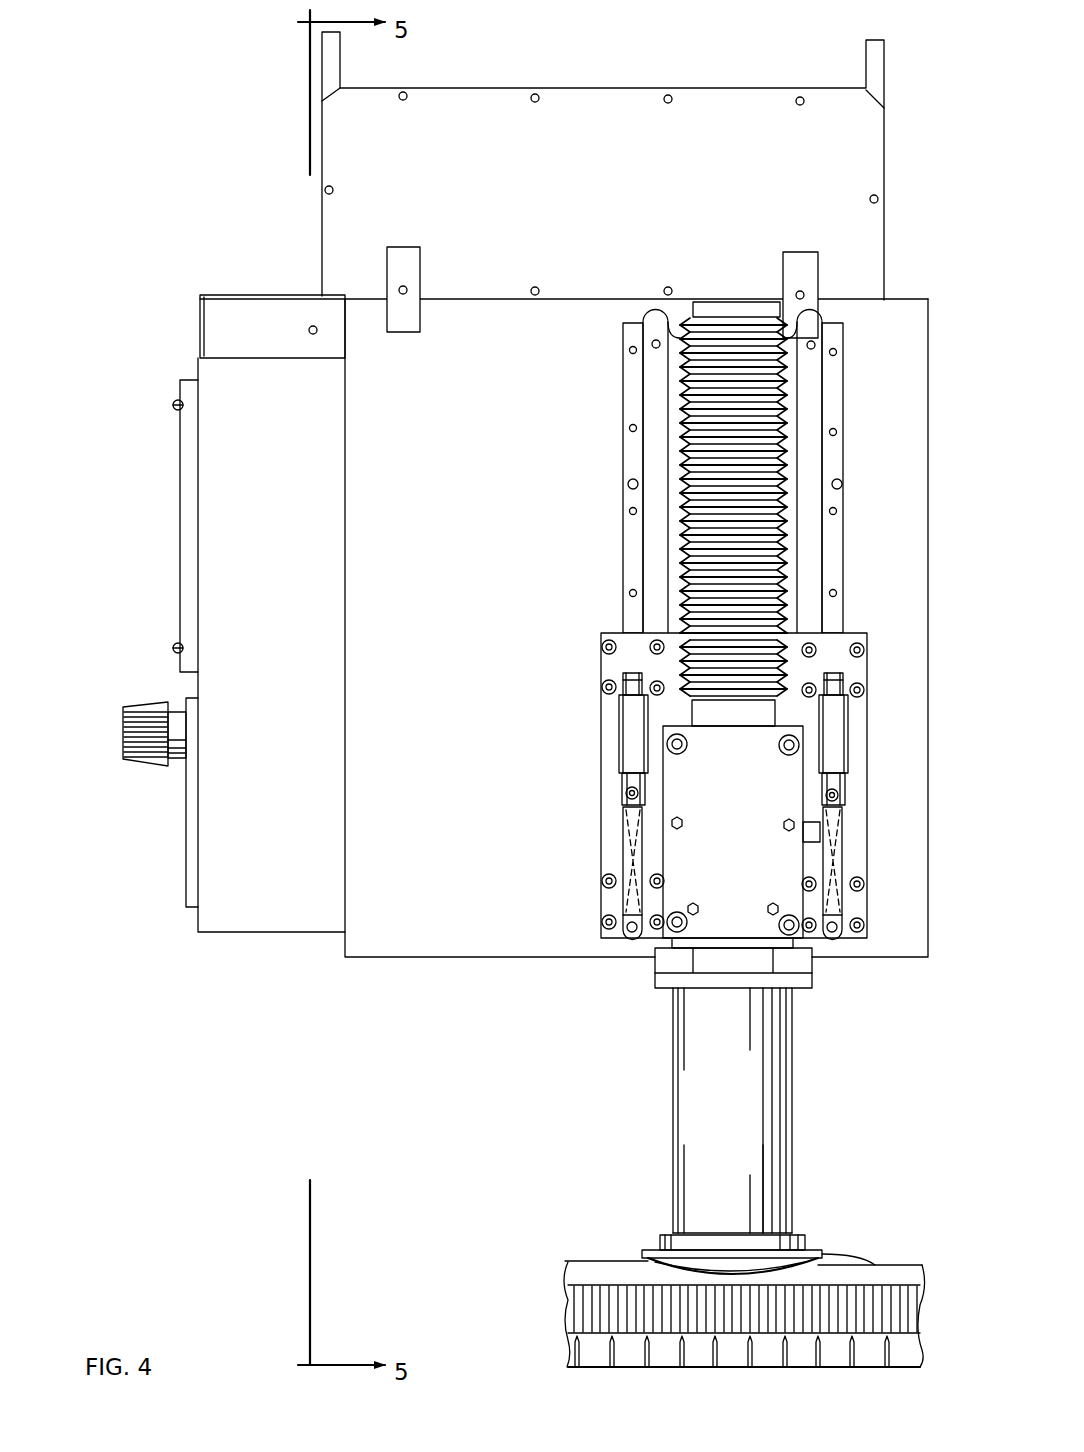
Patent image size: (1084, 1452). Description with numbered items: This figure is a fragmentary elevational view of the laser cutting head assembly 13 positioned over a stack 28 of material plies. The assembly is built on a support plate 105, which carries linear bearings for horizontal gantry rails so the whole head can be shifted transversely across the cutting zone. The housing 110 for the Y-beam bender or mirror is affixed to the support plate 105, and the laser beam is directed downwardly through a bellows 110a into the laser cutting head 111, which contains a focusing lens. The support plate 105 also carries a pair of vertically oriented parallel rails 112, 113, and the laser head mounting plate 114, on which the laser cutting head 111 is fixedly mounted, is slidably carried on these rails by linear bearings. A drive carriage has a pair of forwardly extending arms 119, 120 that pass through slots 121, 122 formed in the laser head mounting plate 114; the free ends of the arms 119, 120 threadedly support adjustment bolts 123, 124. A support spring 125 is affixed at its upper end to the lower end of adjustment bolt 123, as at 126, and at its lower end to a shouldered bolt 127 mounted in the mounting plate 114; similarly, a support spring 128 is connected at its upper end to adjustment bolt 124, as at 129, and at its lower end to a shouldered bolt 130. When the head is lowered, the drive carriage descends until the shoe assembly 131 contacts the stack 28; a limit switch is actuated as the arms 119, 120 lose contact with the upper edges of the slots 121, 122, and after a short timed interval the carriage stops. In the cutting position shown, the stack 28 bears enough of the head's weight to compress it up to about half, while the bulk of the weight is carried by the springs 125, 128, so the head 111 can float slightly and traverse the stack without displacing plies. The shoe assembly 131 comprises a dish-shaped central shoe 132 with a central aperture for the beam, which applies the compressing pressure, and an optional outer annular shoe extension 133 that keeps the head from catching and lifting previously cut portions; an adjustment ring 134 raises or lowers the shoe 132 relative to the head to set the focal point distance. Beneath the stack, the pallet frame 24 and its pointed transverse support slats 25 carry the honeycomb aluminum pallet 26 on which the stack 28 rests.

The housing 110 is at (332, 263).
The rail 112 is at (652, 400).
The rail 113 is at (835, 402).
The bellows 110a is at (712, 487).
The laser head mounting plate 114 is at (625, 640).
The adjustment bolt 123 is at (628, 688).
The adjustment bolt 124 is at (838, 688).
The arm 119 is at (630, 740).
The arm 120 is at (832, 740).
The slot 121 is at (628, 772).
The slot 122 is at (835, 772).
The spring attachment point 126 is at (625, 788).
The spring attachment point 129 is at (838, 795).
The support spring 125 is at (628, 845).
The support spring 128 is at (832, 855).
The shouldered bolt 127 is at (633, 937).
The shouldered bolt 130 is at (822, 940).
The support plate 105 is at (387, 932).
The laser cutting head assembly 13 is at (483, 930).
The laser cutting head 111 is at (765, 1112).
The outer annular shoe extension 133 is at (660, 1245).
The adjustment ring 134 is at (822, 1250).
The laser cutting head shoe assembly 131 is at (830, 1248).
The central shoe 132 is at (720, 1275).
The stack 28 is at (875, 1262).
The aluminum pallet 26 is at (565, 1285).
The pallet frame 24 is at (592, 1346).
The support slats 25 is at (572, 1345).